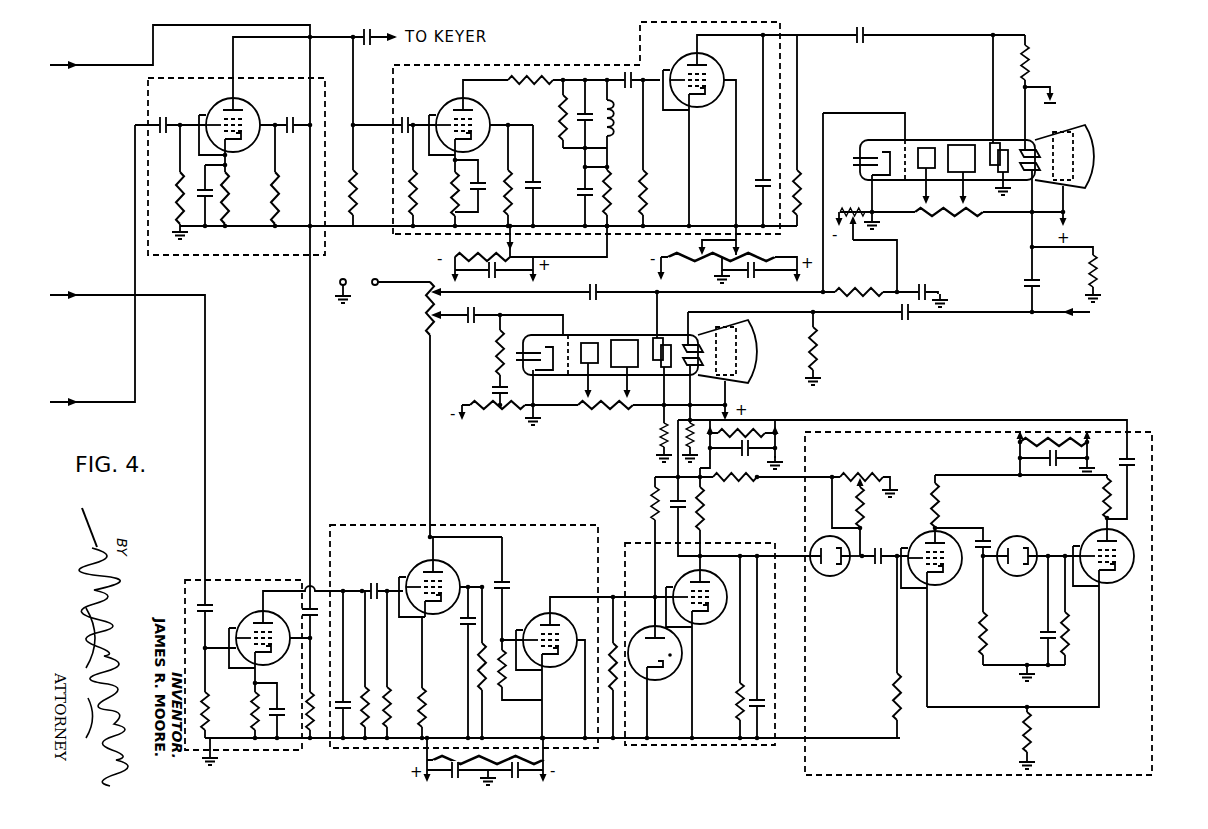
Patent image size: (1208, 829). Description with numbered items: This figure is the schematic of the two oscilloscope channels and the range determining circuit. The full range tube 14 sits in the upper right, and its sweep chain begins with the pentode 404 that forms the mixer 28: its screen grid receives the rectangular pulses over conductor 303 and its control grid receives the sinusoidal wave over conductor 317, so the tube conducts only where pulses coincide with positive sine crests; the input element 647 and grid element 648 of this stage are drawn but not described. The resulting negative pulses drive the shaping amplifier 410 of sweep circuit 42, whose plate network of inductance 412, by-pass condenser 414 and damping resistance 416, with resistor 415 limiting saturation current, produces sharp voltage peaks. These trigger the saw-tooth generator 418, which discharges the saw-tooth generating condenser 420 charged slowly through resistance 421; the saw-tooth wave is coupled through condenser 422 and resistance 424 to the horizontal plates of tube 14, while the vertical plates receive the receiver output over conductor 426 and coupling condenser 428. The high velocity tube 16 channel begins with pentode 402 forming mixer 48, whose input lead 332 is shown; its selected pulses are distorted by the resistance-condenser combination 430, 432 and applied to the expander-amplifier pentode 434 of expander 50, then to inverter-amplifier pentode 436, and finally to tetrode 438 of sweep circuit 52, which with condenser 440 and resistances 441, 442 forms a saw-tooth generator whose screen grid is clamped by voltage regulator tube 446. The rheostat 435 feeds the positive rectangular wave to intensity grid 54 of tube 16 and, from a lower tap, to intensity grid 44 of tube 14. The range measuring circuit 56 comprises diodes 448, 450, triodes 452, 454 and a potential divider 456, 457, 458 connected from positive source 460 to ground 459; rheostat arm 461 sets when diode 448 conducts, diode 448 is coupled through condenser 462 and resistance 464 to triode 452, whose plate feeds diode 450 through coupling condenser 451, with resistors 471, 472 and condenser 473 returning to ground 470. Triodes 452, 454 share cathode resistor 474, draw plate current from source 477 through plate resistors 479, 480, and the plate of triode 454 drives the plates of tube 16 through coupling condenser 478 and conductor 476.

The conductor 303 is at (60, 68).
The conductor 332 is at (60, 297).
The conductor 317 is at (62, 404).
The mixer 28 is at (214, 78).
The pentode 404 is at (220, 100).
The coupling capacitor 647 is at (158, 125).
The grid resistor 648 is at (181, 171).
The sweep circuit 42 is at (543, 65).
The shaping amplifier 410 is at (452, 100).
The resistor 415 is at (512, 81).
The damping resistance 416 is at (560, 92).
The inductance 412 is at (609, 138).
The by-pass condenser 414 is at (584, 125).
The saw-tooth generator 418 is at (692, 46).
The saw-tooth generating condenser 420 is at (760, 183).
The resistance 421 is at (803, 165).
The condenser 422 is at (868, 38).
The resistance 424 is at (1030, 60).
The intensity grid 44 is at (875, 165).
The full range tube 14 is at (973, 215).
The coupling condenser 428 is at (1030, 282).
The conductor 426 is at (1092, 314).
The rheostat 435 is at (426, 292).
The intensity grid 54 is at (562, 340).
The high velocity tube 16 is at (636, 367).
The source of positive potential 460 is at (765, 430).
The conductor 476 is at (934, 416).
The source of positive potential 477 is at (1028, 441).
The coupling condenser 478 is at (1136, 462).
The potential divider resistance 458 is at (852, 476).
The ground 459 is at (892, 482).
The rheostat arm 461 is at (856, 484).
The potential divider resistance 457 is at (866, 508).
The plate resistor 479 is at (938, 508).
The plate resistor 480 is at (1104, 500).
The triode 452 is at (924, 545).
The coupling condenser 451 is at (984, 536).
The triode 454 is at (1098, 536).
The condenser 462 is at (888, 544).
The diode 448 is at (835, 574).
The diode 450 is at (1008, 572).
The fixed resistance 456 is at (740, 479).
The plate resistor 442 is at (704, 508).
The expander 50 is at (478, 525).
The sweep circuit 52 is at (644, 543).
The mixer 48 is at (258, 580).
The mixer 402 is at (260, 612).
The expander-amplifier pentode 434 is at (414, 563).
The inverter-amplifier pentode 436 is at (546, 614).
The tetrode 438 is at (694, 576).
The voltage regulator gas-filled tube 446 is at (652, 630).
The resistance 441 is at (737, 700).
The condenser 440 is at (760, 700).
The resistance 464 is at (896, 690).
The resistor 471 is at (987, 620).
The resistor 472 is at (1070, 635).
The condenser 473 is at (1045, 640).
The ground 470 is at (1036, 672).
The common cathode resistor 474 is at (1033, 730).
The range measuring circuit 56 is at (1153, 592).
The condenser 432 is at (421, 720).
The resistance 430 is at (342, 742).